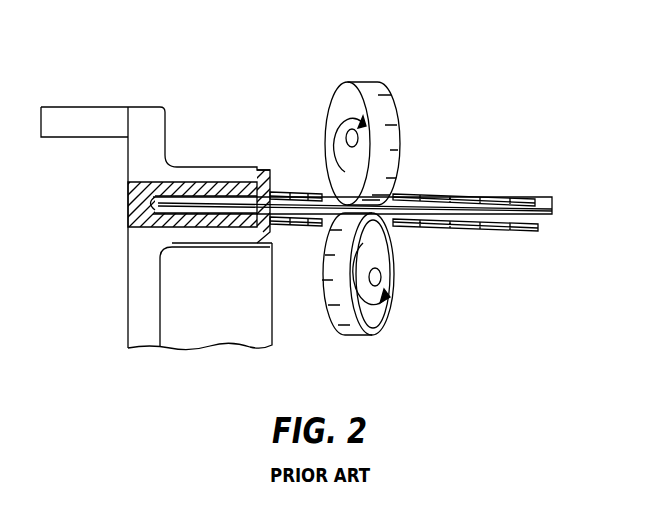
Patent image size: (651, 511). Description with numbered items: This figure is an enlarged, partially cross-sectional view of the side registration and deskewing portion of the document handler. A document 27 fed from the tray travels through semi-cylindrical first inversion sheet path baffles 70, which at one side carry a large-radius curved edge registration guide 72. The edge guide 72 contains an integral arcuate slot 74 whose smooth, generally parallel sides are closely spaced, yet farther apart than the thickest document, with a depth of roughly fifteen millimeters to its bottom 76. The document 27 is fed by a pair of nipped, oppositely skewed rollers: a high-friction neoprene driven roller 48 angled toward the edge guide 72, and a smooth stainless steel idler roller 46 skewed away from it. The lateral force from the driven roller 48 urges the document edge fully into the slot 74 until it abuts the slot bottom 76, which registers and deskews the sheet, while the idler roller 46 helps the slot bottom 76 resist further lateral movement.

The document 27 is at (553, 211).
The idler roller 46 is at (370, 82).
The driven roller 48 is at (387, 310).
The first inversion sheet path baffles 70 is at (302, 192).
The edge registration guide 72 is at (147, 107).
The slot 74 is at (249, 187).
The slot bottom 76 is at (163, 210).